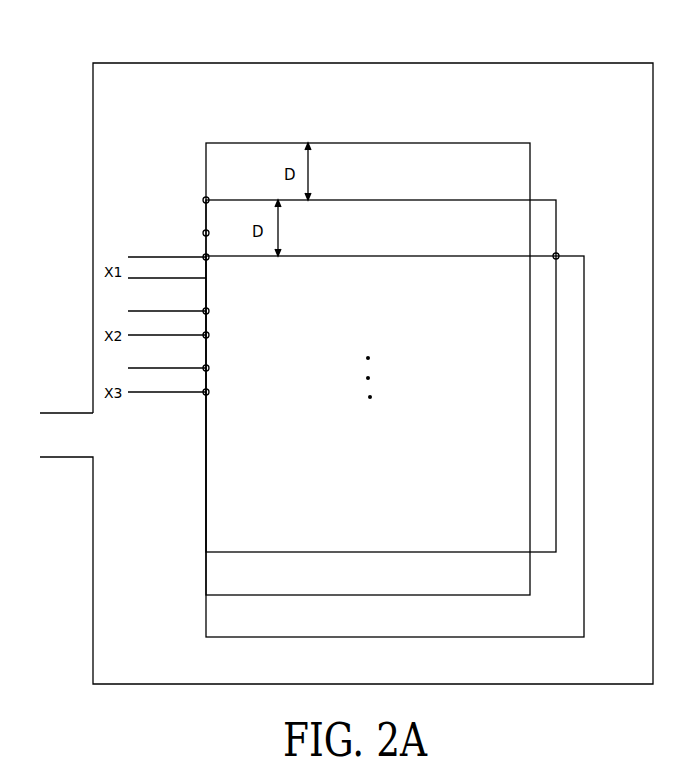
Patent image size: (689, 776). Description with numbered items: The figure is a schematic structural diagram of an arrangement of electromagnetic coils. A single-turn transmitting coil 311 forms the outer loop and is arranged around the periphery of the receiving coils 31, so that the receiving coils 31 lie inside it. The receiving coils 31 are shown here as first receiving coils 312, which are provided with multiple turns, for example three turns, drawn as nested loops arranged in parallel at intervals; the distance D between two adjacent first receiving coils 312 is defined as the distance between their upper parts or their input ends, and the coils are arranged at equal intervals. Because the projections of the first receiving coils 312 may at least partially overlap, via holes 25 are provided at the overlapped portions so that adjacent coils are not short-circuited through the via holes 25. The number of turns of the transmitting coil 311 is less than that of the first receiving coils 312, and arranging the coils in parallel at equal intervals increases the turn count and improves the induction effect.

The transmitting coil 311 is at (277, 63).
The first receiving coils 312 is at (372, 142).
The receiving coils 31 is at (410, 362).
The via holes 25 is at (558, 254).